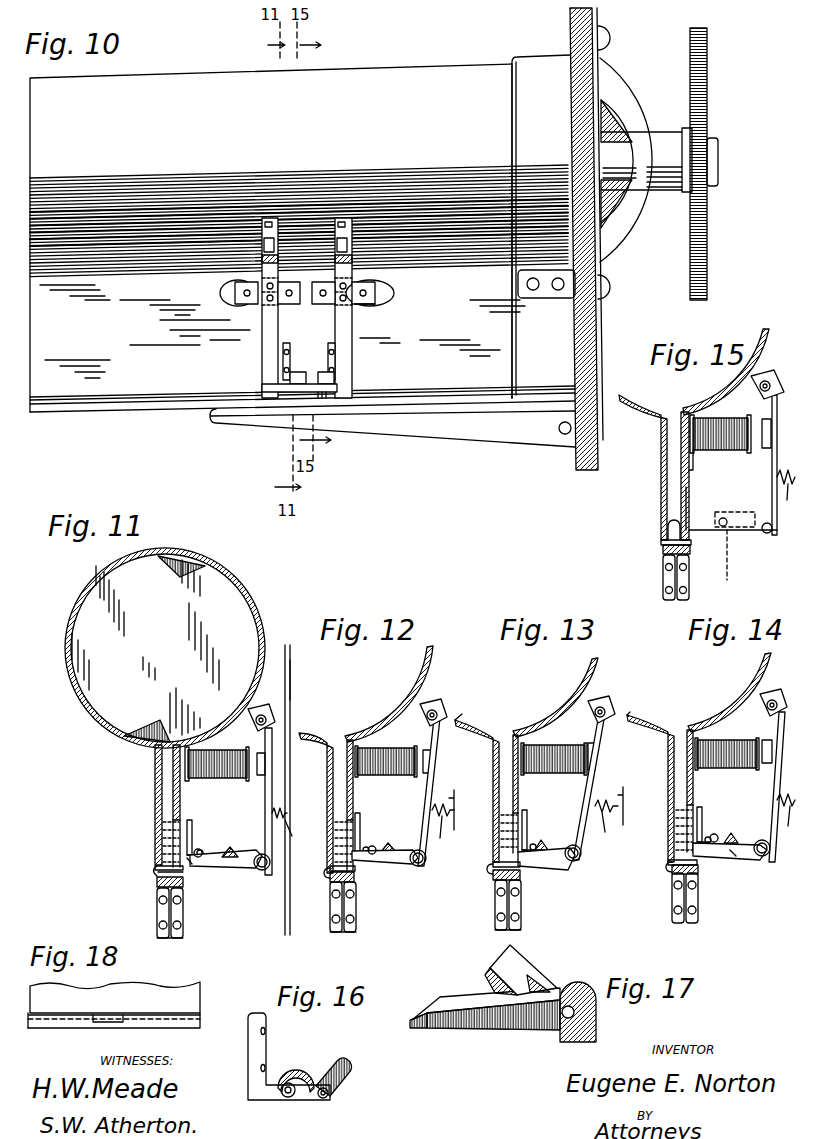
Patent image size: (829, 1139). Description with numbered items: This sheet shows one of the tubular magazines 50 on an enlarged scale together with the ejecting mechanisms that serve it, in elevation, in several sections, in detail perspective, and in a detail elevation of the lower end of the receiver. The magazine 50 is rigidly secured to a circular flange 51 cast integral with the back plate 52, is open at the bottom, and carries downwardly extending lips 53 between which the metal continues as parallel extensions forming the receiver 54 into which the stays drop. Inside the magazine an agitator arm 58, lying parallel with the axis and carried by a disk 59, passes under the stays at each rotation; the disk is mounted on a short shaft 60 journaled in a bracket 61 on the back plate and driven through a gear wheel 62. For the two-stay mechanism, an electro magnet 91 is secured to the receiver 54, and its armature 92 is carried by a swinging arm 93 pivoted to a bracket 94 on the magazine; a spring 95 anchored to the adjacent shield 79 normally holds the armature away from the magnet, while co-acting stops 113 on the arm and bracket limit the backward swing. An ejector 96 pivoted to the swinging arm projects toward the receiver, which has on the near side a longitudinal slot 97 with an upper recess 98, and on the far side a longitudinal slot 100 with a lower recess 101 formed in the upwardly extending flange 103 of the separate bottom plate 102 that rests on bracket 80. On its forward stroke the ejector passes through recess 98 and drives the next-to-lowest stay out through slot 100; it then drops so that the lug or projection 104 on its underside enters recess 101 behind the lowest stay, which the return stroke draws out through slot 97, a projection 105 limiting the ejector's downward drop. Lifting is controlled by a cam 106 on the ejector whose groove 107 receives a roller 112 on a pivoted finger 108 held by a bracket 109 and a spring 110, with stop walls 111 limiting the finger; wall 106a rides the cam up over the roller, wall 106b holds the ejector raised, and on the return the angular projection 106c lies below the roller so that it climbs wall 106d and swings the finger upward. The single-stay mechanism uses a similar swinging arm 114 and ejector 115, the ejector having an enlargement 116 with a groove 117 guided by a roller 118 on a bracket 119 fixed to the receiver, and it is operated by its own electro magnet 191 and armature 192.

In FIG. 10, the tubular magazine 50 is at (299, 238).
In FIG. 15, the tubular magazine 50 is at (726, 372).
In FIG. 11, the tubular magazine 50 is at (262, 612).
In FIG. 12, the tubular magazine 50 is at (435, 656).
In FIG. 13, the tubular magazine 50 is at (600, 666).
In FIG. 14, the tubular magazine 50 is at (766, 662).
In FIG. 10, the circular flange 51 is at (527, 60).
In FIG. 10, the back plate 52 is at (590, 337).
In FIG. 10, the lip 53 is at (520, 298).
In FIG. 10, the receiver 54 is at (58, 328).
In FIG. 15, the receiver 54 is at (660, 485).
In FIG. 11, the receiver 54 is at (155, 782).
In FIG. 12, the receiver 54 is at (328, 784).
In FIG. 13, the receiver 54 is at (495, 765).
In FIG. 14, the receiver 54 is at (682, 805).
In FIG. 18, the receiver 54 is at (168, 992).
In FIG. 11, the arm 58 is at (181, 567).
In FIG. 11, the disk 59 is at (215, 606).
In FIG. 10, the short shaft 60 is at (719, 162).
In FIG. 10, the bracket 61 is at (632, 88).
In FIG. 10, the gear wheel 62 is at (707, 62).
In FIG. 11, the shield 79 is at (291, 668).
In FIG. 12, the shield 79 is at (290, 668).
In FIG. 13, the shield 79 is at (455, 798).
In FIG. 14, the shield 79 is at (630, 798).
In FIG. 10, the bracket 80 is at (432, 411).
In FIG. 11, the bracket 80 is at (184, 922).
In FIG. 12, the bracket 80 is at (357, 918).
In FIG. 13, the bracket 80 is at (497, 910).
In FIG. 10, the electro magnet 91 is at (225, 283).
In FIG. 11, the electro magnet 91 is at (216, 778).
In FIG. 12, the electro magnet 91 is at (372, 776).
In FIG. 13, the electro magnet 91 is at (545, 770).
In FIG. 14, the electro magnet 91 is at (717, 770).
In FIG. 10, the armature 92 is at (238, 302).
In FIG. 11, the armature 92 is at (259, 775).
In FIG. 12, the armature 92 is at (426, 774).
In FIG. 13, the armature 92 is at (592, 743).
In FIG. 14, the armature 92 is at (767, 740).
In FIG. 10, the swinging arm 93 is at (262, 329).
In FIG. 11, the swinging arm 93 is at (272, 810).
In FIG. 12, the swinging arm 93 is at (430, 816).
In FIG. 13, the swinging arm 93 is at (597, 778).
In FIG. 14, the swinging arm 93 is at (774, 786).
In FIG. 15, the bracket 94 is at (766, 378).
In FIG. 11, the bracket 94 is at (262, 710).
In FIG. 12, the bracket 94 is at (436, 705).
In FIG. 13, the bracket 94 is at (603, 702).
In FIG. 14, the bracket 94 is at (775, 697).
In FIG. 15, the spring 95 is at (789, 492).
In FIG. 11, the spring 95 is at (292, 828).
In FIG. 12, the spring 95 is at (284, 820).
In FIG. 13, the spring 95 is at (606, 826).
In FIG. 14, the spring 95 is at (788, 819).
In FIG. 10, the ejector 96 is at (292, 388).
In FIG. 11, the ejector 96 is at (232, 868).
In FIG. 12, the ejector 96 is at (395, 864).
In FIG. 13, the ejector 96 is at (546, 870).
In FIG. 14, the ejector 96 is at (726, 860).
In FIG. 17, the ejector 96 is at (490, 1025).
In FIG. 10, the longitudinal slot 97 is at (163, 401).
In FIG. 15, the longitudinal slot 97 is at (690, 548).
In FIG. 11, the longitudinal slot 97 is at (185, 888).
In FIG. 12, the longitudinal slot 97 is at (357, 886).
In FIG. 13, the longitudinal slot 97 is at (522, 884).
In FIG. 14, the longitudinal slot 97 is at (685, 898).
In FIG. 15, the recess 98 is at (690, 528).
In FIG. 11, the recess 98 is at (200, 870).
In FIG. 12, the recess 98 is at (365, 862).
In FIG. 14, the recess 98 is at (708, 858).
In FIG. 15, the longitudinal slot 100 is at (661, 541).
In FIG. 11, the longitudinal slot 100 is at (160, 866).
In FIG. 12, the longitudinal slot 100 is at (342, 868).
In FIG. 13, the longitudinal slot 100 is at (572, 852).
In FIG. 14, the longitudinal slot 100 is at (672, 860).
In FIG. 18, the longitudinal slot 100 is at (200, 1014).
In FIG. 11, the recess 101 is at (158, 874).
In FIG. 18, the recess 101 is at (108, 1019).
In FIG. 10, the plate 102 is at (80, 409).
In FIG. 15, the plate 102 is at (663, 549).
In FIG. 11, the plate 102 is at (157, 884).
In FIG. 12, the plate 102 is at (330, 878).
In FIG. 13, the plate 102 is at (493, 872).
In FIG. 14, the plate 102 is at (672, 868).
In FIG. 18, the plate 102 is at (182, 1027).
In FIG. 15, the flange 103 is at (668, 524).
In FIG. 11, the flange 103 is at (152, 870).
In FIG. 12, the flange 103 is at (325, 870).
In FIG. 13, the flange 103 is at (574, 881).
In FIG. 14, the flange 103 is at (670, 872).
In FIG. 18, the flange 103 is at (200, 1016).
In FIG. 11, the lug or projection 104 is at (192, 866).
In FIG. 17, the lug or projection 104 is at (418, 1030).
In FIG. 11, the projection 105 is at (263, 870).
In FIG. 12, the projection 105 is at (422, 866).
In FIG. 13, the projection 105 is at (576, 862).
In FIG. 14, the projection 105 is at (766, 858).
In FIG. 17, the projection 105 is at (590, 1025).
In FIG. 11, the cam 106 is at (230, 847).
In FIG. 12, the cam 106 is at (390, 848).
In FIG. 13, the cam 106 is at (541, 845).
In FIG. 14, the cam 106 is at (735, 840).
In FIG. 17, the cam 106 is at (525, 970).
In FIG. 17, the wall 106a is at (493, 980).
In FIG. 17, the wall 106b is at (510, 992).
In FIG. 17, the angular projection 106c is at (545, 970).
In FIG. 17, the wall 106d is at (523, 940).
In FIG. 17, the groove 107 is at (532, 994).
In FIG. 16, the pivoted finger 108 is at (318, 1105).
In FIG. 10, the bracket 109 is at (265, 225).
In FIG. 11, the bracket 109 is at (191, 835).
In FIG. 12, the bracket 109 is at (358, 828).
In FIG. 13, the bracket 109 is at (526, 822).
In FIG. 14, the bracket 109 is at (703, 820).
In FIG. 16, the bracket 109 is at (266, 1046).
In FIG. 11, the spring 110 is at (200, 850).
In FIG. 12, the spring 110 is at (366, 847).
In FIG. 13, the spring 110 is at (534, 844).
In FIG. 14, the spring 110 is at (709, 837).
In FIG. 16, the spring 110 is at (298, 1075).
In FIG. 14, the stop walls 111 is at (733, 858).
In FIG. 16, the stop walls 111 is at (288, 1105).
In FIG. 16, the roller 112 is at (336, 1066).
In FIG. 15, the stops 113 is at (786, 390).
In FIG. 12, the stops 113 is at (288, 724).
In FIG. 13, the stops 113 is at (458, 718).
In FIG. 14, the stops 113 is at (628, 712).
In FIG. 10, the swinging arm 114 is at (347, 330).
In FIG. 15, the swinging arm 114 is at (772, 486).
In FIG. 10, the ejector 115 is at (330, 396).
In FIG. 15, the ejector 115 is at (728, 530).
In FIG. 10, the enlargement 116 is at (317, 378).
In FIG. 15, the enlargement 116 is at (740, 518).
In FIG. 10, the groove 117 is at (320, 401).
In FIG. 15, the groove 117 is at (762, 538).
In FIG. 10, the roller 118 is at (325, 400).
In FIG. 15, the roller 118 is at (732, 563).
In FIG. 10, the bracket 119 is at (330, 345).
In FIG. 15, the bracket 119 is at (693, 500).
In FIG. 10, the electro magnet 191 is at (372, 304).
In FIG. 15, the electro magnet 191 is at (725, 452).
In FIG. 10, the armature 192 is at (375, 294).
In FIG. 15, the armature 192 is at (763, 447).